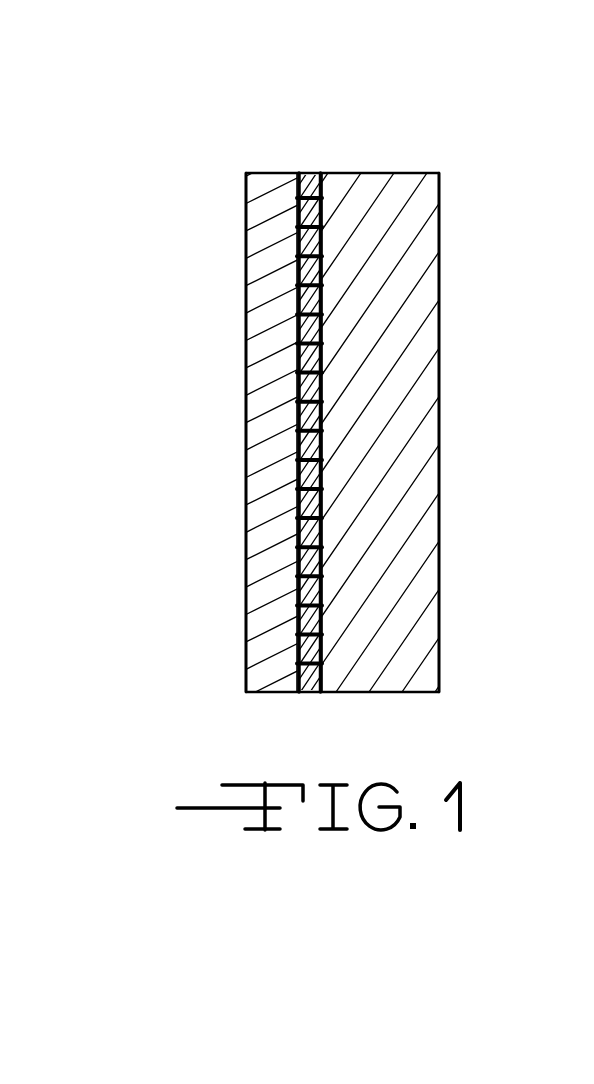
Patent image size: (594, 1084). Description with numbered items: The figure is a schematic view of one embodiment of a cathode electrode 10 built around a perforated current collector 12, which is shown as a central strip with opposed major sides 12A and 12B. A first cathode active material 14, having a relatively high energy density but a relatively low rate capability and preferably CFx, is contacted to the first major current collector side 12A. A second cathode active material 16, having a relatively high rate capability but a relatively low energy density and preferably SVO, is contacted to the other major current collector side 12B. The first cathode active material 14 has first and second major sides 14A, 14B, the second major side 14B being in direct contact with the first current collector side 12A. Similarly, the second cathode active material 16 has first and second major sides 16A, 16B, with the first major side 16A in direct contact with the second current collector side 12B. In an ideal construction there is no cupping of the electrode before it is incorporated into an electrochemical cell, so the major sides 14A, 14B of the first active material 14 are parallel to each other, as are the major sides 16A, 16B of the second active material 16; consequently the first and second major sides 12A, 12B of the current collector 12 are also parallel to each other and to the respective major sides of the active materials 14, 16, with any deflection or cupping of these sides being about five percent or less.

The cathode electrode 10 is at (452, 110).
The perforated current collector 12 is at (315, 173).
The first major current collector side 12A is at (325, 203).
The second major current collector side 12B is at (296, 249).
The first cathode active material 14 is at (398, 430).
The first major side of the first cathode active material 14A is at (439, 358).
The second major side of the first cathode active material 14B is at (325, 324).
The second cathode active material 16 is at (257, 283).
The first major side of the second cathode active material 16A is at (297, 463).
The second major side of the second cathode active material 16B is at (247, 402).